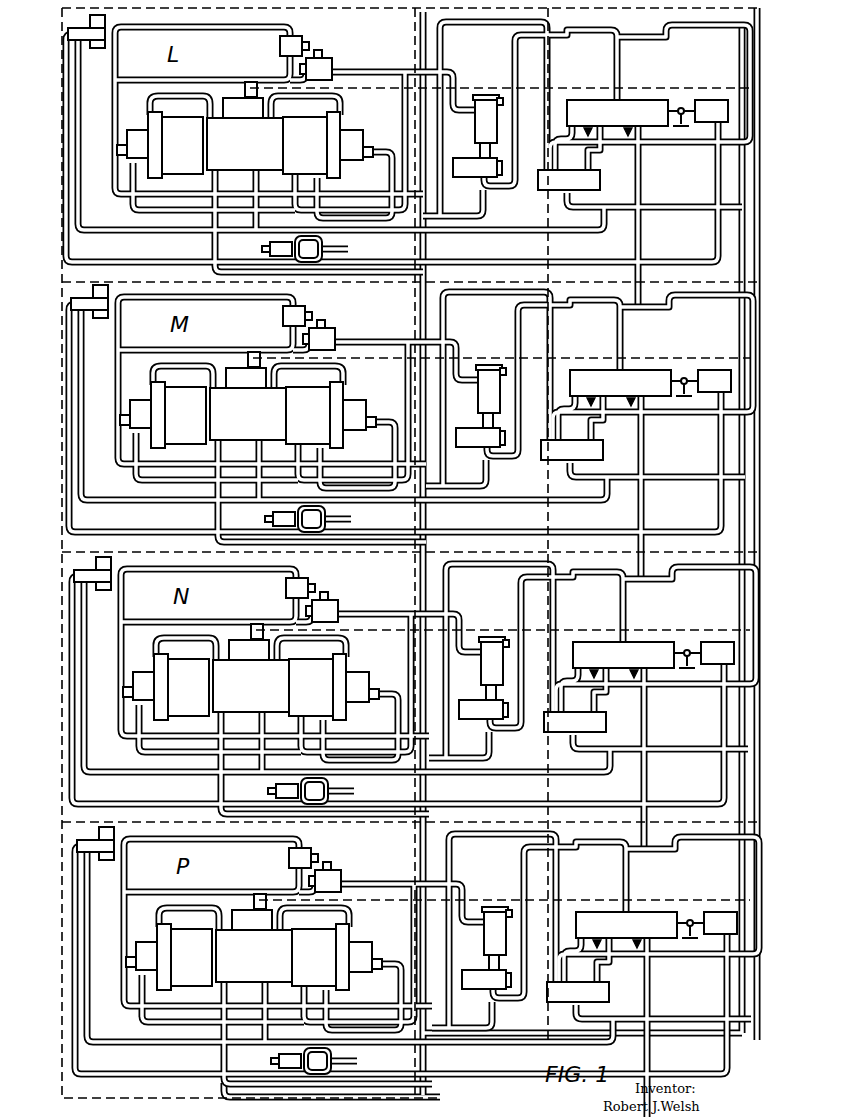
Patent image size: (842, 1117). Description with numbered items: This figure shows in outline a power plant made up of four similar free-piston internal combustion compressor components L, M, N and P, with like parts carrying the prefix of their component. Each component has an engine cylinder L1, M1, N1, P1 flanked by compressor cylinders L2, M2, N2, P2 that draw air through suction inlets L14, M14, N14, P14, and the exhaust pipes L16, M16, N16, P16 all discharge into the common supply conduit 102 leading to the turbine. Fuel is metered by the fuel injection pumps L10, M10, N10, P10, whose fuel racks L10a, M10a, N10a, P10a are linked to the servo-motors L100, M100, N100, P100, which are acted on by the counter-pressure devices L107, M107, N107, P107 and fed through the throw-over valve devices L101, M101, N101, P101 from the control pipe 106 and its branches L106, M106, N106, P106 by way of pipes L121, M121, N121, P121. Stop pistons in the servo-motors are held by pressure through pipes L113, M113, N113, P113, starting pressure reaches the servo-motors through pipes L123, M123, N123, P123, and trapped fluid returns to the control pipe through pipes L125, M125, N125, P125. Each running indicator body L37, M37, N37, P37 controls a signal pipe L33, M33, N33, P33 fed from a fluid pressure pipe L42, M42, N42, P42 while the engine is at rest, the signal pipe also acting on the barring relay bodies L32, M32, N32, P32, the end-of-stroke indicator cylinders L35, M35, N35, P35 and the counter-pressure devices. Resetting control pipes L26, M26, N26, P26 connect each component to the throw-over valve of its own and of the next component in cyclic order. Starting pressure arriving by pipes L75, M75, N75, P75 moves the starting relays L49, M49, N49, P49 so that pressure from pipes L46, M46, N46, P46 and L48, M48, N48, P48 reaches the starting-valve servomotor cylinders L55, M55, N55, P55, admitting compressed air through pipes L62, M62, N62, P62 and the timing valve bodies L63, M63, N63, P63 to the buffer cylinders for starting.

The engine cylinder L1 is at (245, 134).
The compressor cylinder L2 is at (327, 138).
The suction inlet L14 is at (244, 145).
The fuel injection pump L10 is at (245, 90).
The fuel rack L10a is at (284, 80).
The exhaust pipe L16 is at (212, 250).
The resetting control pipe L26 is at (112, 144).
The cylinder body of barring relay L32 is at (135, 41).
The signal pipe L33 is at (106, 78).
The cylinder of end of stroke indicator L35 is at (280, 46).
The running indicator body L37 is at (262, 249).
The fluid pressure pipe L42 is at (322, 250).
The pipe L46 is at (115, 115).
The pipe L48 is at (458, 190).
The starting relay L49 is at (477, 167).
The servomotor cylinder for starting valve L55 is at (475, 128).
The pipe L62 is at (386, 70).
The timing valve body L63 is at (328, 60).
The pipe L75 is at (444, 52).
The servo-motor L100 is at (617, 118).
The throw-over valve device L101 is at (569, 180).
The control pipe L106 is at (674, 217).
The counter-pressure device L107 is at (699, 113).
The pipe L113 is at (576, 149).
The pipe L121 is at (598, 184).
The pipe L123 is at (512, 72).
The pipe L125 is at (628, 66).
The engine cylinder M1 is at (248, 404).
The compressor cylinder M2 is at (248, 415).
The suction inlet M14 is at (247, 415).
The fuel injection pump M10 is at (234, 358).
The fuel rack M10a is at (259, 337).
The exhaust pipe M16 is at (196, 517).
The resetting control pipe M26 is at (357, 458).
The cylinder body of barring relay M32 is at (140, 311).
The signal pipe M33 is at (410, 376).
The cylinder of end of stroke indicator M35 is at (277, 316).
The running indicator body M37 is at (266, 518).
The fluid pressure pipe M42 is at (331, 519).
The pipe M46 is at (102, 374).
The pipe M48 is at (445, 470).
The starting relay M49 is at (480, 437).
The servomotor cylinder for starting valve M55 is at (478, 396).
The pipe M62 is at (397, 325).
The timing valve body M63 is at (335, 327).
The pipe M75 is at (454, 377).
The servo-motor M100 is at (620, 388).
The throw-over valve device M101 is at (572, 450).
The control pipe M106 is at (679, 487).
The counter-pressure device M107 is at (704, 383).
The pipe M113 is at (581, 419).
The pipe M121 is at (622, 445).
The pipe M123 is at (505, 401).
The pipe M125 is at (654, 322).
The engine cylinder N1 is at (251, 676).
The compressor cylinder N2 is at (251, 687).
The suction inlet N14 is at (250, 687).
The fuel injection pump N10 is at (237, 630).
The fuel rack N10a is at (262, 609).
The exhaust pipe N16 is at (199, 789).
The resetting control pipe N26 is at (359, 730).
The cylinder body of barring relay N32 is at (142, 583).
The signal pipe N33 is at (413, 646).
The cylinder of end of stroke indicator N35 is at (280, 588).
The running indicator body N37 is at (269, 790).
The fluid pressure pipe N42 is at (333, 791).
The pipe N46 is at (105, 646).
The pipe N48 is at (448, 742).
The starting relay N49 is at (483, 709).
The servomotor cylinder for starting valve N55 is at (481, 668).
The pipe N62 is at (399, 597).
The timing valve body N63 is at (337, 599).
The pipe N75 is at (456, 649).
The servo-motor N100 is at (623, 660).
The throw-over valve device N101 is at (575, 722).
The control pipe N106 is at (681, 759).
The counter-pressure device N107 is at (706, 655).
The pipe N113 is at (583, 691).
The pipe N121 is at (624, 717).
The pipe N123 is at (507, 673).
The pipe N125 is at (656, 594).
The engine cylinder P1 is at (254, 946).
The compressor cylinder P2 is at (254, 957).
The suction inlet P14 is at (253, 957).
The fuel injection pump P10 is at (240, 900).
The fuel rack P10a is at (265, 879).
The exhaust pipe P16 is at (202, 1059).
The resetting control pipe P26 is at (364, 1000).
The cylinder body of barring relay P32 is at (144, 853).
The signal pipe P33 is at (106, 78).
The cylinder of end of stroke indicator P35 is at (283, 858).
The running indicator body P37 is at (272, 1060).
The fluid pressure pipe P42 is at (335, 1061).
The pipe P46 is at (108, 916).
The pipe P48 is at (451, 1012).
The starting relay P49 is at (486, 979).
The servomotor cylinder for starting valve P55 is at (484, 938).
The pipe P62 is at (401, 867).
The timing valve body P63 is at (339, 869).
The pipe P75 is at (458, 919).
The servo-motor P100 is at (626, 930).
The throw-over valve device P101 is at (578, 992).
The control pipe P106 is at (683, 1029).
The counter-pressure device P107 is at (708, 925).
The pipe P113 is at (585, 961).
The pipe P121 is at (626, 987).
The pipe P123 is at (509, 943).
The pipe P125 is at (658, 864).
The common supply conduit 102 is at (427, 514).
The control pipe 106 is at (740, 184).